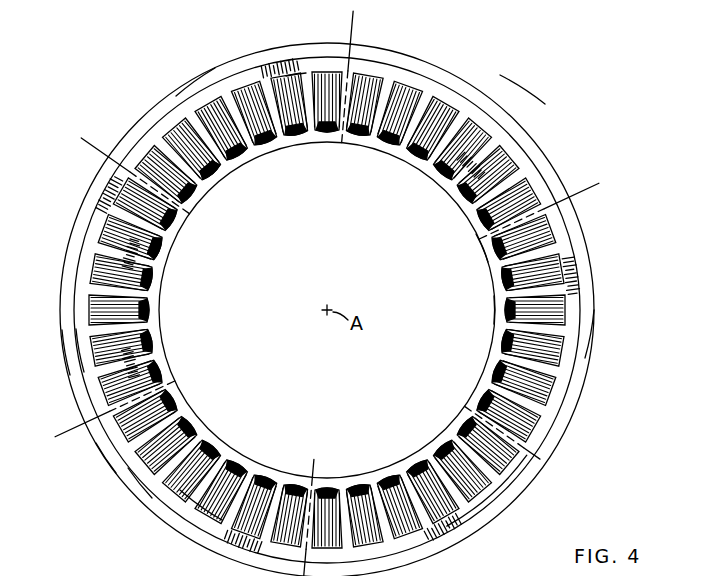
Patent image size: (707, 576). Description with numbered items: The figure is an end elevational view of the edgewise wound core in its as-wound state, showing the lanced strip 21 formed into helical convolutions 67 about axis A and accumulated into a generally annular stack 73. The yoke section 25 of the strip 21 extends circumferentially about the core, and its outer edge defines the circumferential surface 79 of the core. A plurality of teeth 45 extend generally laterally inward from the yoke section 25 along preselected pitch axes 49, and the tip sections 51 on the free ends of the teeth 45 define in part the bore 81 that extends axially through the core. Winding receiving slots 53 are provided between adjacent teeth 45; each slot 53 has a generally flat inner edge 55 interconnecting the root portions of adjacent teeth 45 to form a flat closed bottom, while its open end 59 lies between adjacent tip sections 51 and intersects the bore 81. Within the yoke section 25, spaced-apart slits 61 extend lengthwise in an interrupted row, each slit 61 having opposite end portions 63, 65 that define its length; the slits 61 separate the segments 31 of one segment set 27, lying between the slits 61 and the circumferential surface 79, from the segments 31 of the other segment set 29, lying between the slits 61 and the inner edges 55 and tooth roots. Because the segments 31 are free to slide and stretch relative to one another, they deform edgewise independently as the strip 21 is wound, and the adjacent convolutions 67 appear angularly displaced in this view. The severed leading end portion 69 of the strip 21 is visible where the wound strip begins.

The lanced strip 21 is at (245, 60).
The yoke section 25 is at (590, 348).
The segment set 27 is at (104, 456).
The segment set 29 is at (140, 486).
The segment 31 is at (72, 357).
The tooth 45 is at (208, 178).
The pitch axis 49 is at (86, 140).
The tip section 51 is at (495, 312).
The slot 53 is at (165, 246).
The inner edge 55 is at (95, 243).
The open end 59 is at (228, 528).
The slit 61 is at (76, 318).
The end portion of slit 63 is at (140, 162).
The end portion of slit 65 is at (338, 66).
The helical convolution 67 is at (452, 107).
The leading end portion 69 is at (318, 46).
The annular stack 73 is at (527, 99).
The circumferential surface 79 is at (190, 84).
The bore 81 is at (488, 254).